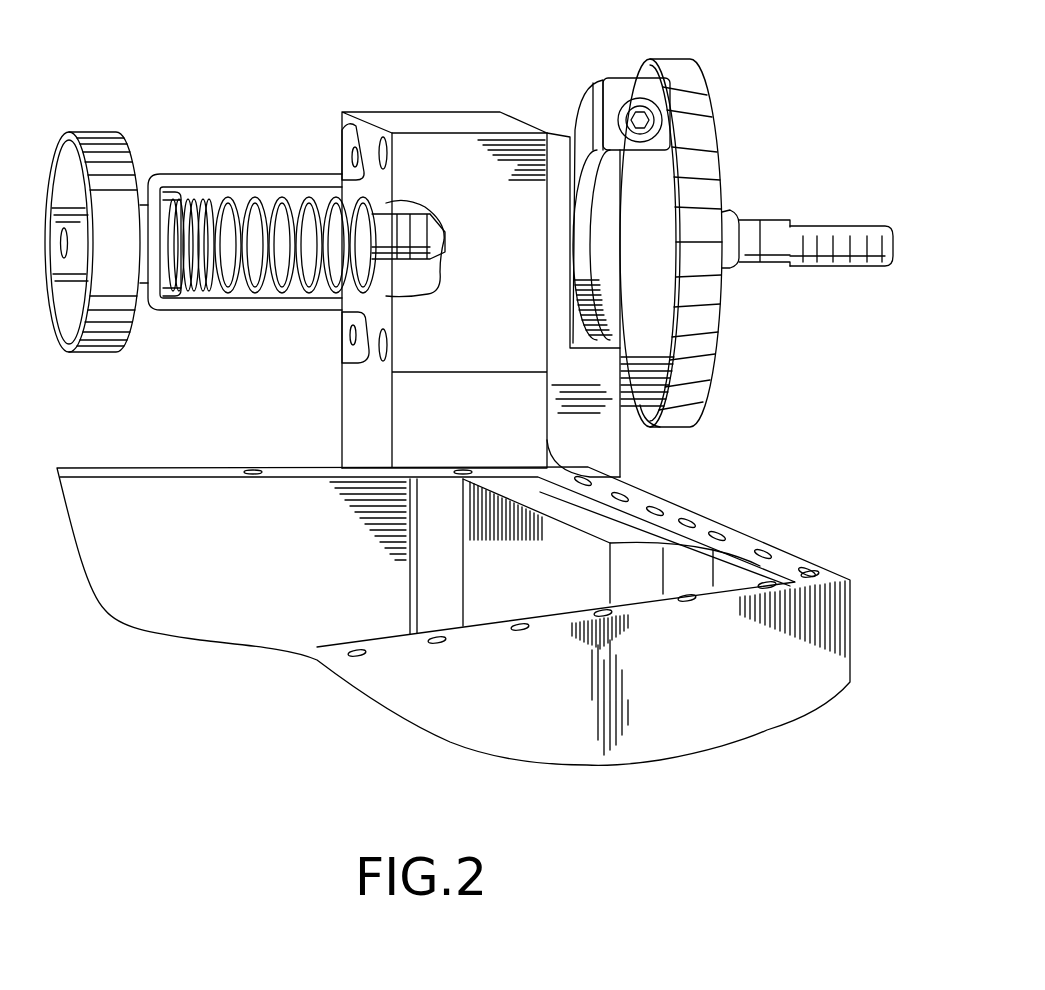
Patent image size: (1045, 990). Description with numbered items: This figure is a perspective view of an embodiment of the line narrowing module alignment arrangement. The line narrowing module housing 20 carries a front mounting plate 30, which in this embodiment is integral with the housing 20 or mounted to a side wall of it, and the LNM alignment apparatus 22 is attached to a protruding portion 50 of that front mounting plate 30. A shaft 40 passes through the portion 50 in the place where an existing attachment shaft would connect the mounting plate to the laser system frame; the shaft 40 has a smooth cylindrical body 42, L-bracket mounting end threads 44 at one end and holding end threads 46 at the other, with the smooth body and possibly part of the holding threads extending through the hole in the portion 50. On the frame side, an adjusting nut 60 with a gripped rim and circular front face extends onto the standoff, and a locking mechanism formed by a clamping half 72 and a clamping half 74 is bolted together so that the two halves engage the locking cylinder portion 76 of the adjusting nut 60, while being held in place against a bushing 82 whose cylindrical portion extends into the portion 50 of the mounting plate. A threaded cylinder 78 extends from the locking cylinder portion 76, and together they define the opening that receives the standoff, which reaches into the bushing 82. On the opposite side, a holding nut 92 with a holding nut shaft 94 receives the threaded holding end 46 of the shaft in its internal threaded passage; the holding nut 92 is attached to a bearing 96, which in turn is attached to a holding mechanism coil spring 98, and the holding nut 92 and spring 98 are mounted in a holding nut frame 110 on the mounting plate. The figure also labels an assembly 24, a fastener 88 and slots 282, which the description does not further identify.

The line narrowing module housing 20 is at (173, 580).
The LNM alignment apparatus 22 is at (752, 357).
The tensioning knob assembly 24 is at (256, 148).
The front mounting plate 30 is at (302, 412).
The shaft 40 is at (758, 216).
The smooth cylindrical body 42 is at (436, 234).
The L-bracket mounting end threads 44 is at (878, 228).
The holding end threads 46 is at (403, 228).
The portion of the front mounting plate 50 is at (465, 146).
The adjusting nut 60 is at (712, 128).
The clamping half 72 is at (584, 100).
The clamping half 74 is at (640, 327).
The locking cylinder portion 76 is at (620, 74).
The threaded cylinder 78 is at (578, 262).
The bushing 82 is at (600, 447).
The fastener 88 is at (636, 56).
The holding nut 92 is at (100, 146).
The holding nut shaft 94 is at (146, 286).
The bearing 96 is at (215, 300).
The holding mechanism coil spring 98 is at (299, 296).
The holding nut frame 110 is at (310, 182).
The slot 282 is at (383, 138).